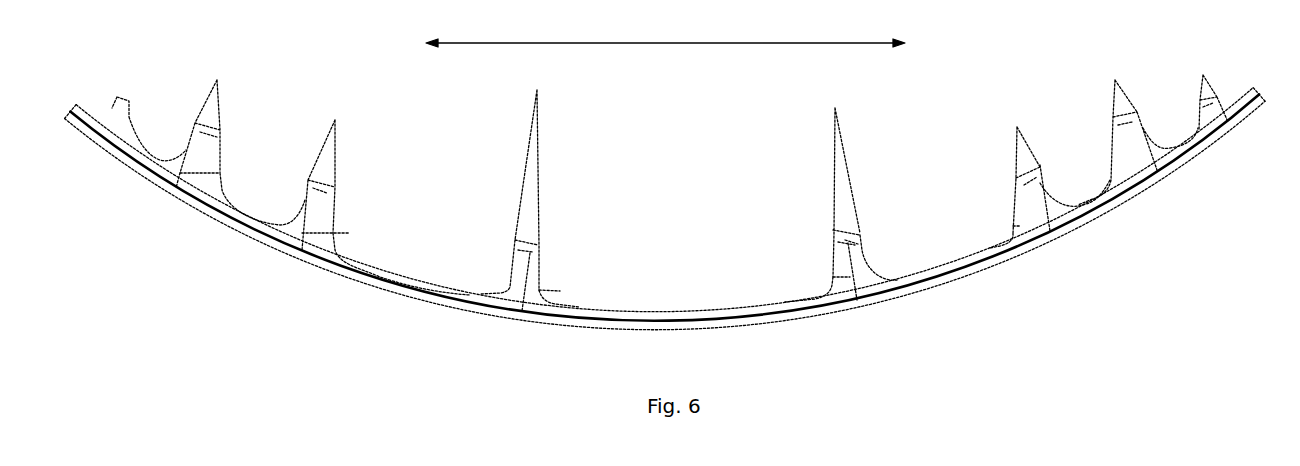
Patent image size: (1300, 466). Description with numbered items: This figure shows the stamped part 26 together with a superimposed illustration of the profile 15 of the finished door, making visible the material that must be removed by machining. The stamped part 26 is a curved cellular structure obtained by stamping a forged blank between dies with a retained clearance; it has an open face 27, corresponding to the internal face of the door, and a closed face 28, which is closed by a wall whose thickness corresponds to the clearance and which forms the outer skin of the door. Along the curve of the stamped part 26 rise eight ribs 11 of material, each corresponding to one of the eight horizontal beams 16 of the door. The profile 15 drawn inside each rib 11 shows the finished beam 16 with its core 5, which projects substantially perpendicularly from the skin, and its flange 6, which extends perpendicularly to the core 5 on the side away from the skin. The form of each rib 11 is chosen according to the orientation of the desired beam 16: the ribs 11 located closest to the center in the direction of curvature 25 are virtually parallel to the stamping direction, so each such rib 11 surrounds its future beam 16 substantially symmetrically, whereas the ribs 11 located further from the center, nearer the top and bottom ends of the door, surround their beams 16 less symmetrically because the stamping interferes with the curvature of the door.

The core 5 is at (560, 291).
The flange 6 is at (858, 245).
The rib 11 is at (121, 97).
The profile 15 is at (385, 279).
The beam 16 is at (220, 174).
The direction of curvature 25 is at (626, 45).
The stamped part 26 is at (1044, 246).
The open face 27 is at (568, 243).
The closed face 28 is at (926, 296).